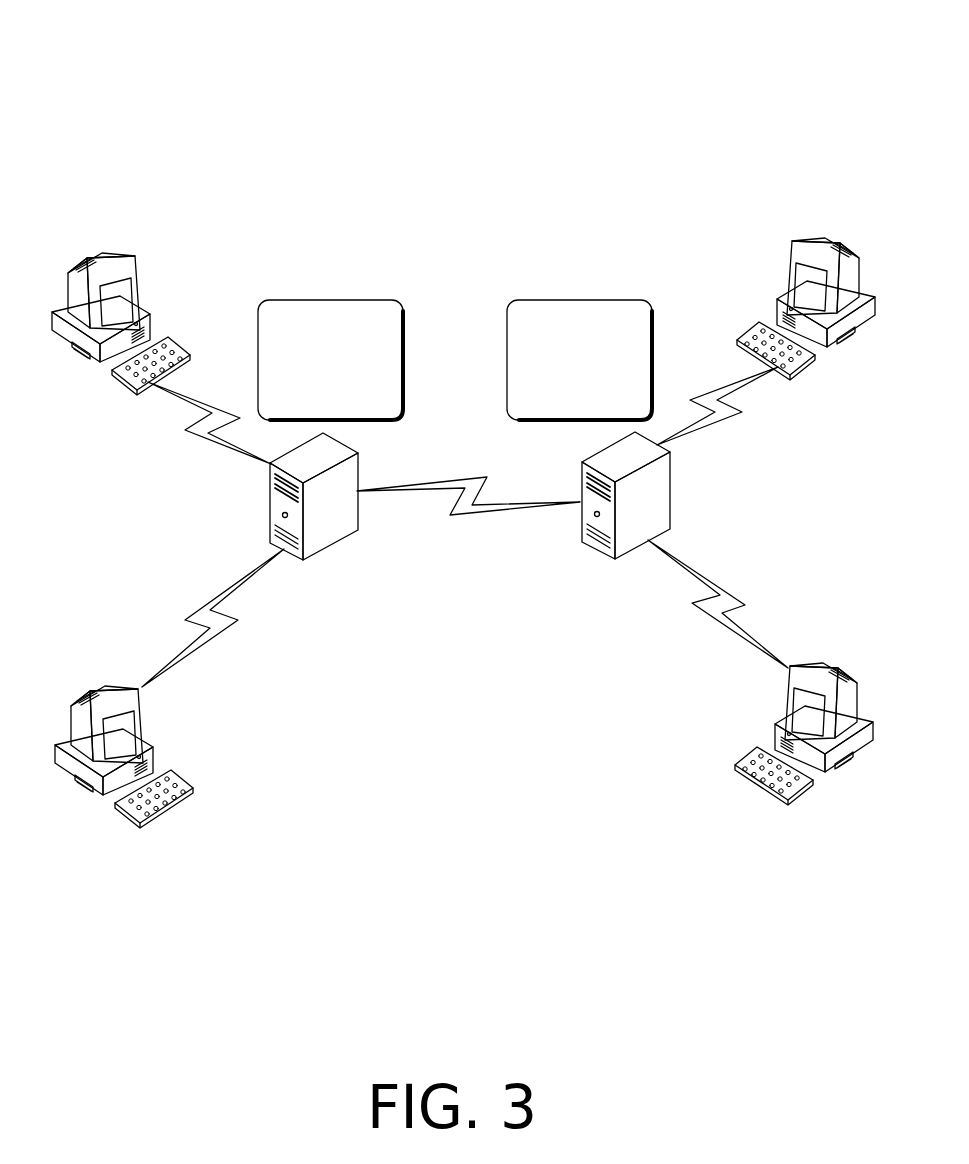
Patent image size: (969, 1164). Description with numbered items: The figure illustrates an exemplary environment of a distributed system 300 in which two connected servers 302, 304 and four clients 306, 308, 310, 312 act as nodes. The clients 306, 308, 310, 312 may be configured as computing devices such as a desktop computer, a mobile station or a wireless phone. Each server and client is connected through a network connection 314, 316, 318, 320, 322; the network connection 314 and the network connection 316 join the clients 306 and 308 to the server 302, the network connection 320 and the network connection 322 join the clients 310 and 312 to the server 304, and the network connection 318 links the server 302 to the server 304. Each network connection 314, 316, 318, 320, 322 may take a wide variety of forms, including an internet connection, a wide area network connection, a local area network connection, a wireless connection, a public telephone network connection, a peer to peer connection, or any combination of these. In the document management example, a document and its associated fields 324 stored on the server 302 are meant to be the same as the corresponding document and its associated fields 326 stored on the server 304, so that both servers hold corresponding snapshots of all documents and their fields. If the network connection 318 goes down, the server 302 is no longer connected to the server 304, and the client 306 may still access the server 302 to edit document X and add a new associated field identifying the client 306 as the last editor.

The distributed system 300 is at (152, 42).
The server 302 is at (268, 500).
The server 304 is at (670, 487).
The client 306 is at (137, 258).
The client 308 is at (123, 685).
The client 310 is at (790, 240).
The client 312 is at (805, 667).
The network connection 314 is at (184, 430).
The network connection 316 is at (183, 620).
The network connection 318 is at (487, 477).
The network connection 320 is at (743, 412).
The network connection 322 is at (744, 604).
The document and its associated fields 324 is at (330, 360).
The document and its associated fields 326 is at (579, 360).